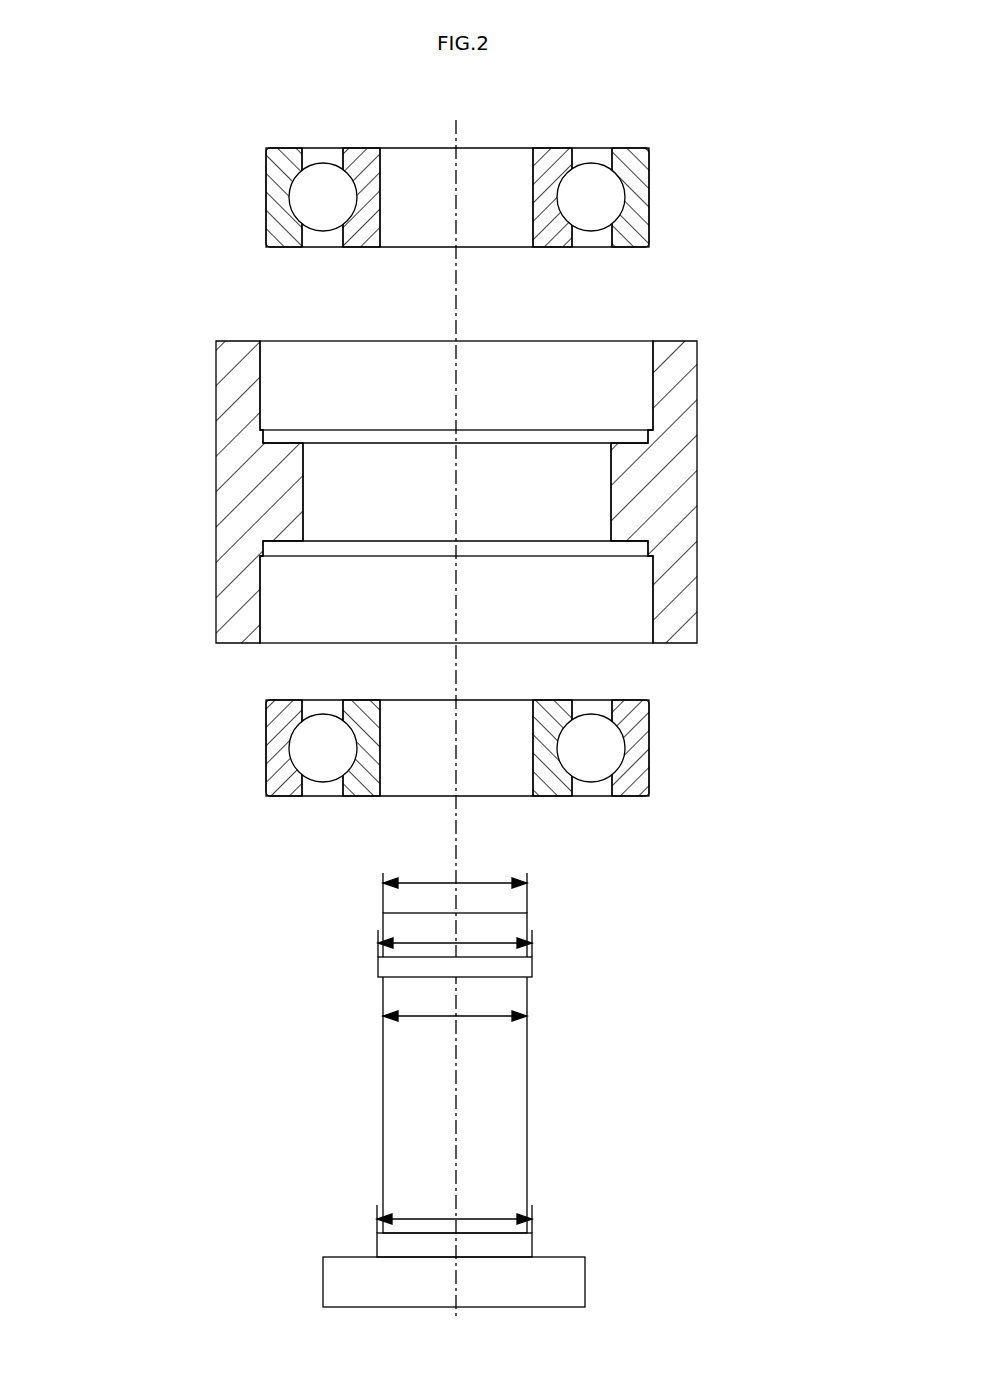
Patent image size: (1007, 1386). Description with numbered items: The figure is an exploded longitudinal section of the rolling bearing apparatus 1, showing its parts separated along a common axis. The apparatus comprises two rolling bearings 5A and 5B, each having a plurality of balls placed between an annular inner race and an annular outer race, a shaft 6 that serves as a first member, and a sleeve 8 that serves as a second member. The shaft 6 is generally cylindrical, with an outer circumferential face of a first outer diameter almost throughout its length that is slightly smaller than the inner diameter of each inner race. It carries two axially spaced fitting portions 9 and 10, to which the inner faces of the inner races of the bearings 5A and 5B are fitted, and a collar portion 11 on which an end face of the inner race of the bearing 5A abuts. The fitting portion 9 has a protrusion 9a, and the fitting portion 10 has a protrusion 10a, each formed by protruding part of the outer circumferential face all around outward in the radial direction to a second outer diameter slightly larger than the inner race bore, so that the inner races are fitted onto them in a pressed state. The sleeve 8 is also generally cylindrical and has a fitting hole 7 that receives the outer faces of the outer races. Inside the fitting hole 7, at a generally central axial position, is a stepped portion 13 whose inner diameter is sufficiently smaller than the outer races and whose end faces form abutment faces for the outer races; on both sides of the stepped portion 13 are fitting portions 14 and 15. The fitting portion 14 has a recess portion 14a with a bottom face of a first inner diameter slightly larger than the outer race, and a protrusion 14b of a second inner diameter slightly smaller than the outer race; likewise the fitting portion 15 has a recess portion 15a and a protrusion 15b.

The rolling bearing apparatus 1 is at (157, 256).
The rolling bearing 5A is at (668, 766).
The rolling bearing 5B is at (668, 216).
The shaft 6 is at (600, 1113).
The fitting hole 7 is at (483, 362).
The sleeve 8 is at (697, 530).
The fitting portion 9 is at (311, 1203).
The protrusion 9a is at (377, 1240).
The fitting portion 10 is at (320, 998).
The protrusion 10a is at (378, 966).
The collar portion 11 is at (570, 1257).
The stepped portion 13 is at (611, 477).
The fitting portion 14 is at (280, 630).
The recess portion 14a is at (260, 605).
The protrusion 14b is at (268, 548).
The fitting portion 15 is at (280, 389).
The recess portion 15a is at (260, 360).
The protrusion 15b is at (268, 437).